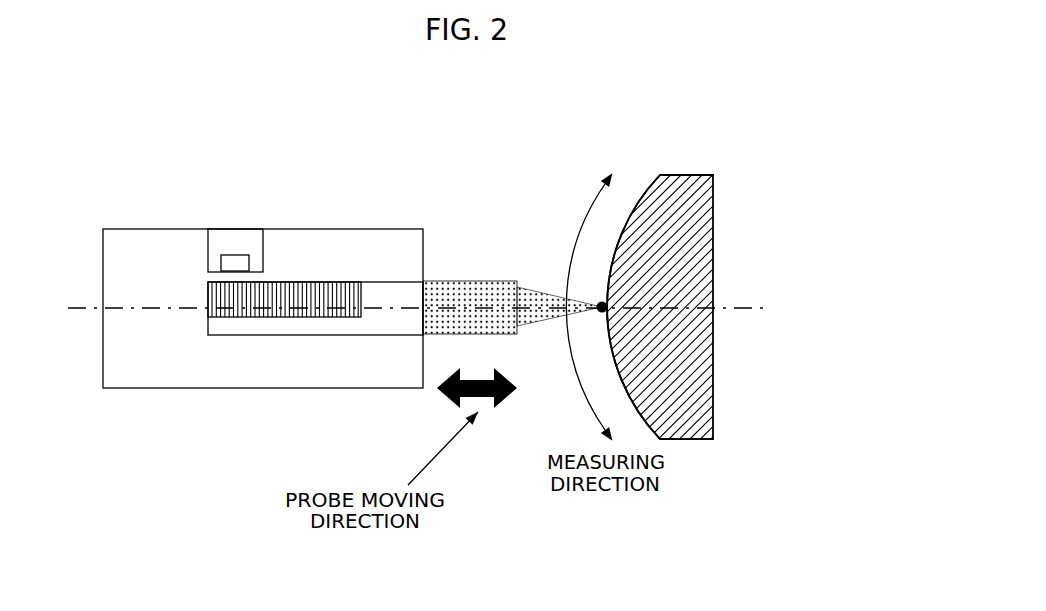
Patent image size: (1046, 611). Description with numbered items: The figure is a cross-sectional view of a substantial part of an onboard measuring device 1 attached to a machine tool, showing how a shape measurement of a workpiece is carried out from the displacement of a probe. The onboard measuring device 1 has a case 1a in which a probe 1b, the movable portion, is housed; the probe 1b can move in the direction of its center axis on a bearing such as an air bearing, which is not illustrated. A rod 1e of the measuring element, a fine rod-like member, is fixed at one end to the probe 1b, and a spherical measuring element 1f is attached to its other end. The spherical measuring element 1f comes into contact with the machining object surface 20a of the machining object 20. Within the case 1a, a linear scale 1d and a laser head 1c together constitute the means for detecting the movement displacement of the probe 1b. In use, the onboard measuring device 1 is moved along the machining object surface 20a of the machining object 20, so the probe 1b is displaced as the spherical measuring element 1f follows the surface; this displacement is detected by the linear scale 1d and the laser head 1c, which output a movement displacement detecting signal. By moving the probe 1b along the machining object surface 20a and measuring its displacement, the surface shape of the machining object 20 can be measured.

The onboard measuring device 1 is at (275, 134).
The case 1a is at (155, 228).
The probe 1b is at (470, 280).
The laser head 1c is at (235, 255).
The linear scale 1d is at (318, 282).
The rod of the measuring element 1e is at (543, 292).
The spherical measuring element 1f is at (601, 300).
The machining object 20 is at (683, 360).
The machining object surface 20a is at (617, 362).